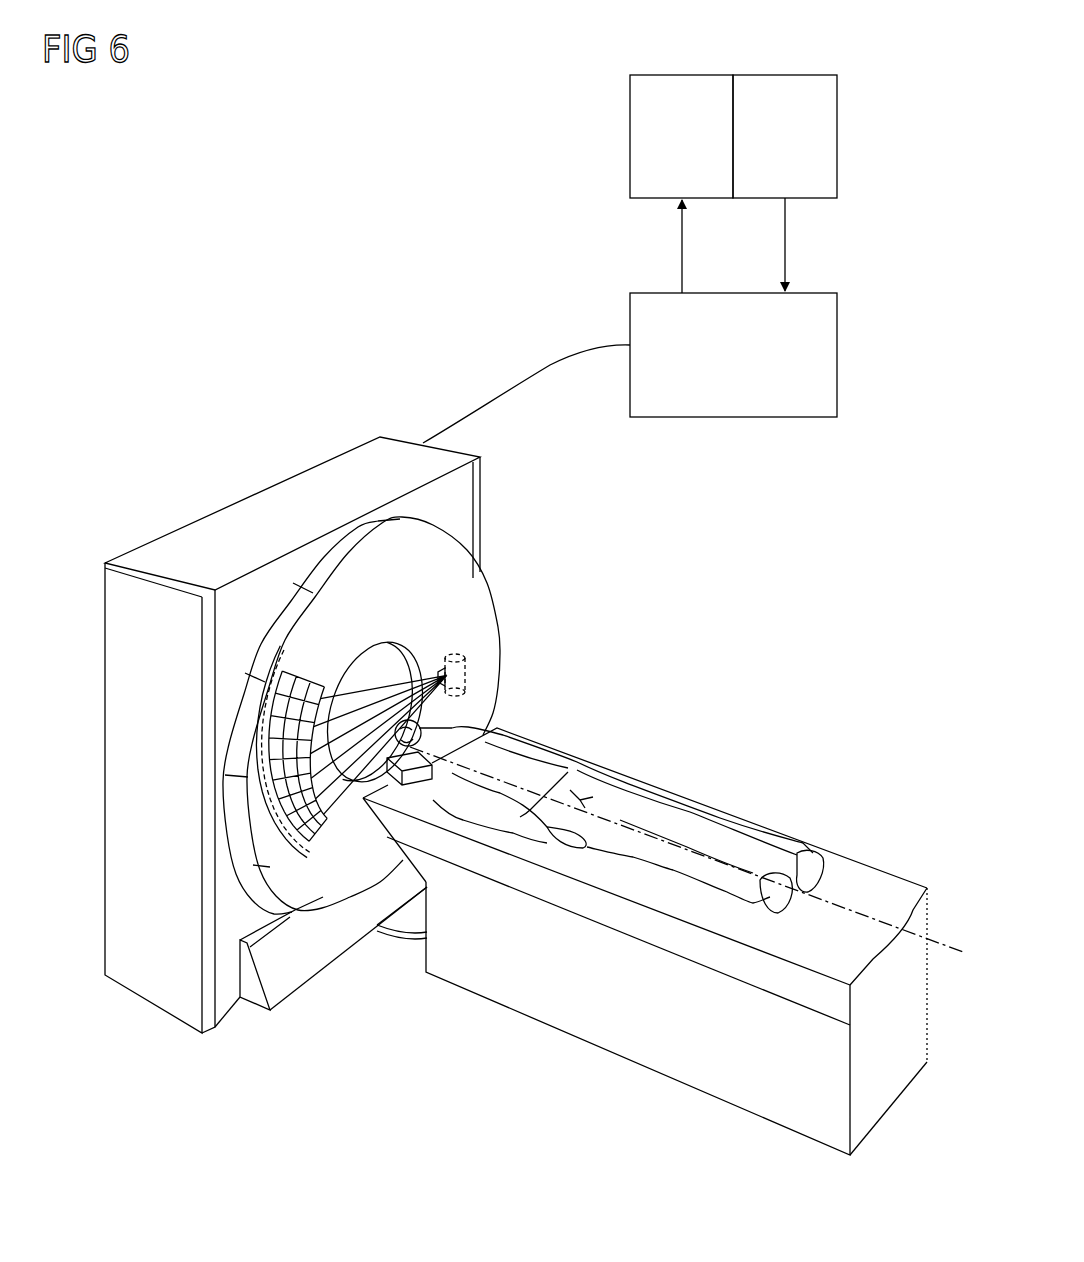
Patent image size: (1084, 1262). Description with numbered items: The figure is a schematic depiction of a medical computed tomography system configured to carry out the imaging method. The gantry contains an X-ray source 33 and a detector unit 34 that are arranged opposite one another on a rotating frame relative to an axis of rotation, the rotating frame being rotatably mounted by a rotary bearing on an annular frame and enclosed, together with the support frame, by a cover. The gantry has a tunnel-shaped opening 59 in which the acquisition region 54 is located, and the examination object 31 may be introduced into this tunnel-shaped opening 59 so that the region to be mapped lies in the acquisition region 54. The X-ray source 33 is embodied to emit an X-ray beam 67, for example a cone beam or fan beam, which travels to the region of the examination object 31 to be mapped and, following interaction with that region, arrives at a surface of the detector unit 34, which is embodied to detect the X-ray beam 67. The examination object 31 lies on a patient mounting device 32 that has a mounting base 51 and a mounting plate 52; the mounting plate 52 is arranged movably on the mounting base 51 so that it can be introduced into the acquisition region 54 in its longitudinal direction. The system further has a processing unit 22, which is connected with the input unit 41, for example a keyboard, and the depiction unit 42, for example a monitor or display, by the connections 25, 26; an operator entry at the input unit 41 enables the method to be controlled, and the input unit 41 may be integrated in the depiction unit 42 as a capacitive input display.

The processing unit 22 is at (837, 352).
The data connection 25 is at (680, 247).
The data connection 26 is at (787, 240).
The examination object 31 is at (680, 820).
The patient mounting device 32 is at (545, 1054).
The X-ray source 33 is at (465, 682).
The detector unit 34 is at (298, 850).
The input unit 41 is at (630, 128).
The depiction unit 42 is at (837, 136).
The mounting base 51 is at (673, 1062).
The mounting plate 52 is at (890, 888).
The acquisition region 54 is at (328, 732).
The tunnel-shaped opening 59 is at (363, 668).
The X-ray beam 67 is at (397, 672).